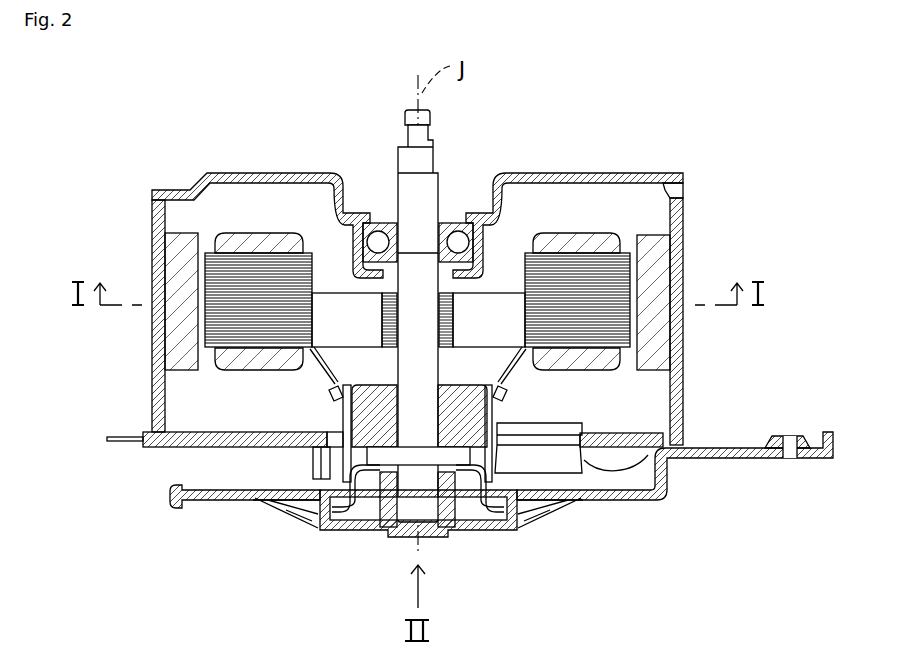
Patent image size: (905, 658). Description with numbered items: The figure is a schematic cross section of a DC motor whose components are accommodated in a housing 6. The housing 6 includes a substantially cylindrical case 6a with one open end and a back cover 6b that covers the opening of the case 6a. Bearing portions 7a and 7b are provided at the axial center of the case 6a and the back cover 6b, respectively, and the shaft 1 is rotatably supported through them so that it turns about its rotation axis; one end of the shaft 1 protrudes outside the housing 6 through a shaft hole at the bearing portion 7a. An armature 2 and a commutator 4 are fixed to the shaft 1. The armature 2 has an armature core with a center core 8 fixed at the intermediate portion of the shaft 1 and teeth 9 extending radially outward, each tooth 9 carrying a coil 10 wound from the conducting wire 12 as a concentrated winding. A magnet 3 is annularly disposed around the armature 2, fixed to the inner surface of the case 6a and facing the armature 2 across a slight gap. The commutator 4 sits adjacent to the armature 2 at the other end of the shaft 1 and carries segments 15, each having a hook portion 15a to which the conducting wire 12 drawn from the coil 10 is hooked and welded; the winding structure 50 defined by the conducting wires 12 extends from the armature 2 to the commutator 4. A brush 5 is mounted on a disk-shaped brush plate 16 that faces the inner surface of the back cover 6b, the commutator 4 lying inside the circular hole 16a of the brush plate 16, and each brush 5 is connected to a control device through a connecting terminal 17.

The shaft 1 is at (431, 195).
The armature 2 is at (508, 280).
The magnet 3 is at (183, 262).
The commutator 4 is at (358, 415).
The brush 5 is at (569, 432).
The housing 6 is at (676, 349).
The case 6a is at (679, 408).
The back cover 6b is at (730, 455).
The bearing portion 7a is at (379, 232).
The bearing portion 7b is at (447, 497).
The center core 8 is at (338, 302).
The teeth 9 is at (557, 262).
The coil 10 is at (590, 242).
The conducting wire 12 is at (502, 380).
The segment 15 is at (348, 463).
The hook portion 15a is at (511, 395).
The brush plate 16 is at (233, 455).
The circular hole 16a is at (329, 432).
The connecting terminal 17 is at (126, 441).
The winding structure 50 is at (296, 383).